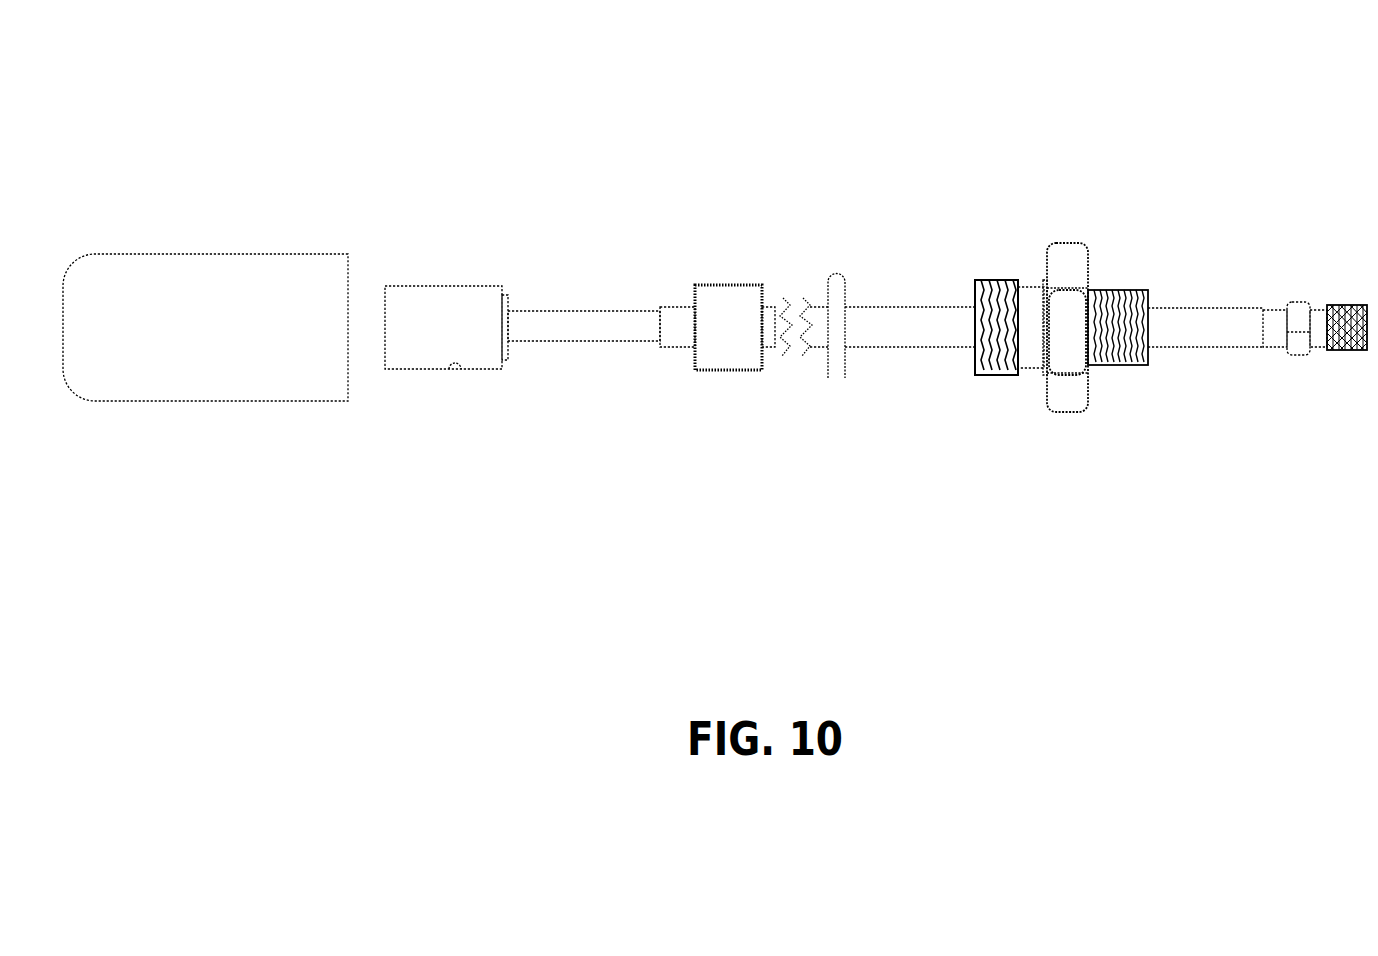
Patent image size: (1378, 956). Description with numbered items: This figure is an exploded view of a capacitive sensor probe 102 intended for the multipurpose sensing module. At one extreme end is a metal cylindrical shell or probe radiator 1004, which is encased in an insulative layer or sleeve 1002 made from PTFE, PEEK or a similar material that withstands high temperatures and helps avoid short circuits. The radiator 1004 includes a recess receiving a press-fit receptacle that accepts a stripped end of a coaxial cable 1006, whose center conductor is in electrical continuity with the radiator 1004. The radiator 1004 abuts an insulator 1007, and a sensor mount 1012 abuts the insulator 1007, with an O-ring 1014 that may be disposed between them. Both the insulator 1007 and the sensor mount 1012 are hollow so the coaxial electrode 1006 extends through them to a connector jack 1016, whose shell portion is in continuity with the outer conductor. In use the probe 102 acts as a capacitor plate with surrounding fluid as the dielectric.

The capacitive sensor probe 102 is at (778, 142).
The insulative layer or sleeve 1002 is at (148, 381).
The probe radiator 1004 is at (436, 354).
The coaxial cable 1006 is at (582, 335).
The insulator 1007 is at (727, 350).
The O-ring 1014 is at (840, 350).
The sensor mount 1012 is at (1075, 390).
The connector jack 1016 is at (1353, 352).